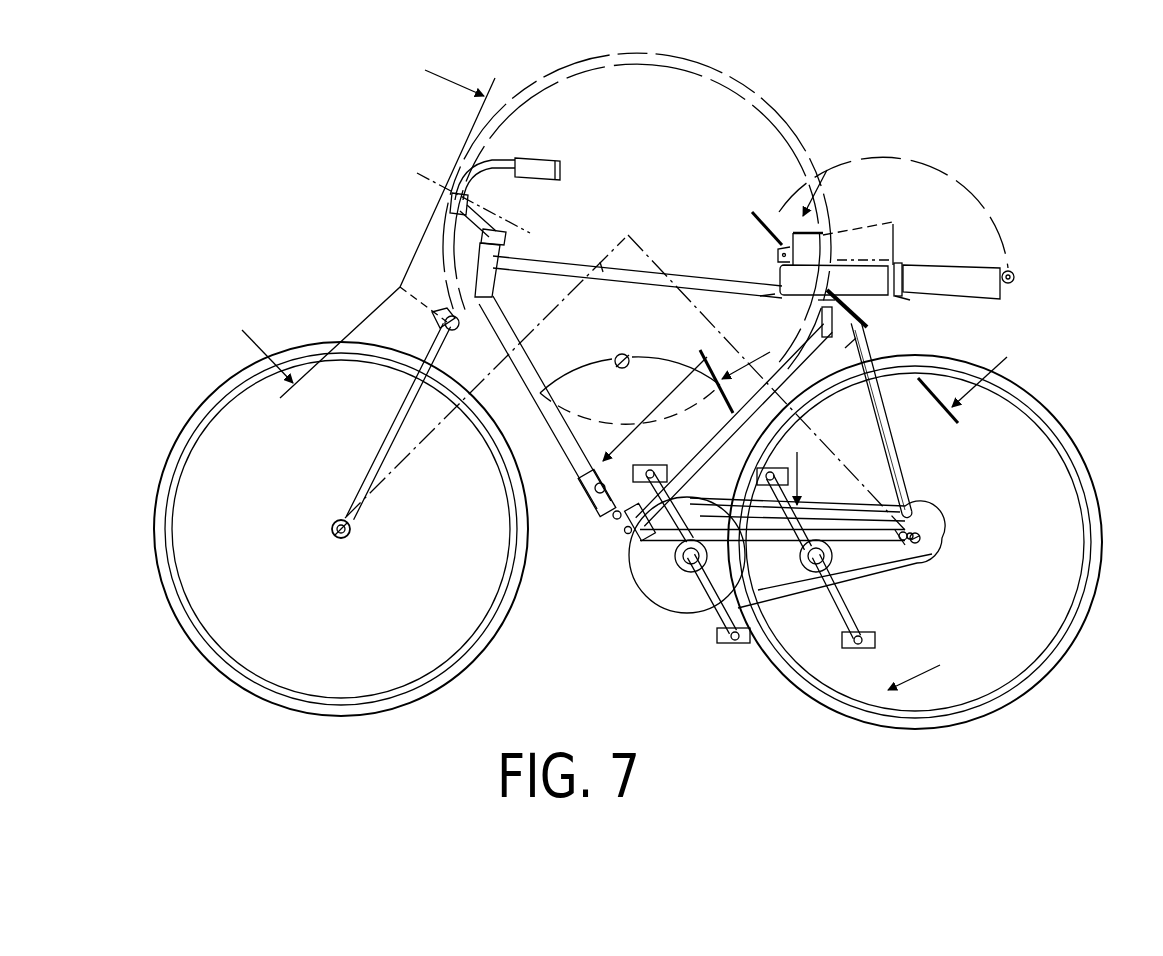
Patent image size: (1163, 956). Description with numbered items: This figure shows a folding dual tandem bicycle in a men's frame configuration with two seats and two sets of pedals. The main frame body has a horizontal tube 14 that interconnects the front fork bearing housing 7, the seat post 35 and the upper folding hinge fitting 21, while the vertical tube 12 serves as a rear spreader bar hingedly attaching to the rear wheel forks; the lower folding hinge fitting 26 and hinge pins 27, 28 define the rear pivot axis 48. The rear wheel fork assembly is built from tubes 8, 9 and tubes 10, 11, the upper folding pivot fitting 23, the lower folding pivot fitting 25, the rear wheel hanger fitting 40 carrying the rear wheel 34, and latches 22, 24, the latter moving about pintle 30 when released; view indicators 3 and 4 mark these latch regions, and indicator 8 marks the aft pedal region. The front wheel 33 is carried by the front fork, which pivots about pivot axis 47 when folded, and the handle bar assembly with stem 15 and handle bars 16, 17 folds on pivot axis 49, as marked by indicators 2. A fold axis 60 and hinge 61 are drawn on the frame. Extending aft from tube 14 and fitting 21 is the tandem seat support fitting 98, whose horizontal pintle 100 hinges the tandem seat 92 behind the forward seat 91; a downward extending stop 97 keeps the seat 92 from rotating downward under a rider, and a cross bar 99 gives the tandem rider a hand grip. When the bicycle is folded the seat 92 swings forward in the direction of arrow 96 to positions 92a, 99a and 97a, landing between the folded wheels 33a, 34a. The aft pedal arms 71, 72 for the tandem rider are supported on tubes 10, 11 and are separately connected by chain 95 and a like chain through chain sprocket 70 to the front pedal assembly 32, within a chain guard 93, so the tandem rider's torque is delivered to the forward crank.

The pivot axis of handlebars / section indicator 2 is at (356, 228).
The section indicator for latch 22 3 is at (888, 285).
The section indicator for latch 24 4 is at (702, 431).
The front fork bearing housing 7 is at (503, 281).
The rear wheel fork tube 8 is at (830, 512).
The rear wheel fork tube 9 is at (898, 450).
The rear wheel fork tube 10 is at (897, 495).
The rear wheel fork tube 11 is at (905, 495).
The vertical tube 12 is at (710, 450).
The tube 14 is at (592, 262).
The stem 15 is at (503, 228).
The handle bar 16 is at (505, 160).
The handle bar 17 is at (515, 158).
The upper folding hinge fitting 21 is at (795, 307).
The latch 22 is at (883, 367).
The upper folding pivot fitting 23 is at (841, 356).
The latch 24 is at (582, 486).
The lower folding pivot fitting 25 is at (648, 466).
The lower folding hinge fitting 26 is at (612, 520).
The hinge pin 27 is at (620, 535).
The hinge pin 28 is at (820, 332).
The pintle 30 is at (588, 499).
The pedal assembly 32 is at (716, 621).
The front wheel 33 is at (480, 647).
The front wheel folded position 33a is at (572, 396).
The rear wheel 34 is at (1098, 628).
The rear wheel folded position 34a is at (718, 408).
The seat post 35 is at (822, 322).
The rear wheel hanger fitting 40 is at (925, 517).
The pivot axis 47 is at (400, 285).
The pivot axis 48 is at (612, 546).
The pivot axis 49 is at (420, 177).
The fold axis 60 is at (648, 236).
The top tube hinge 61 is at (592, 280).
The chain sprocket 70 is at (642, 590).
The aft pedal arm 71 is at (780, 490).
The aft pedal arm 72 is at (862, 612).
The forward seat 91 is at (757, 296).
The tandem seat 92 is at (1003, 290).
The tandem seat folded position 92a is at (830, 234).
The chain guard 93 is at (898, 578).
The chain 95 is at (785, 596).
The arrow 96 is at (996, 232).
The stop 97 is at (915, 302).
The stop folded position 97a is at (893, 223).
The tandem seat support fitting 98 is at (880, 323).
The cross bar 99 is at (1015, 272).
The cross bar folded position 99a is at (778, 260).
The pintle 100 is at (900, 262).